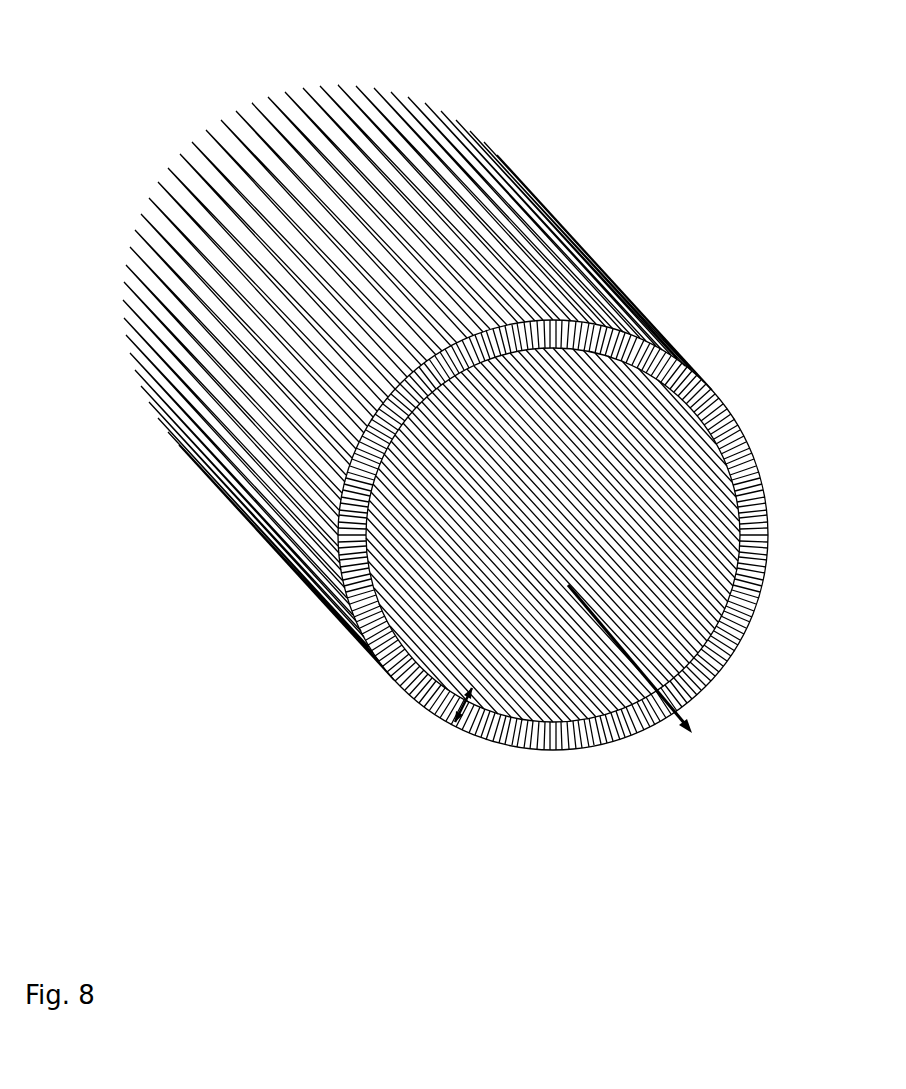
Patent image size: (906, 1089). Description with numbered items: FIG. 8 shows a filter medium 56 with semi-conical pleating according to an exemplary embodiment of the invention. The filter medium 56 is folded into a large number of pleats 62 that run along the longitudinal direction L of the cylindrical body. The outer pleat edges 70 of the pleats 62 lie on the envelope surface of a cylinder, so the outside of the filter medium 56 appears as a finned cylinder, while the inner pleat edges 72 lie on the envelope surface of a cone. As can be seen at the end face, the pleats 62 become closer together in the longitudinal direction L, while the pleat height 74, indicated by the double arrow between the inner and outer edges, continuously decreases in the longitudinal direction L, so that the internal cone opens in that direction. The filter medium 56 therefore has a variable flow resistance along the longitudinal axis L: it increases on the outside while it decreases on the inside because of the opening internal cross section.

The filter medium 56 is at (625, 117).
The pleats 62 is at (158, 193).
The outer pleat edges 70 is at (625, 293).
The inner pleat edges 72 is at (700, 383).
The pleat height 74 is at (457, 707).